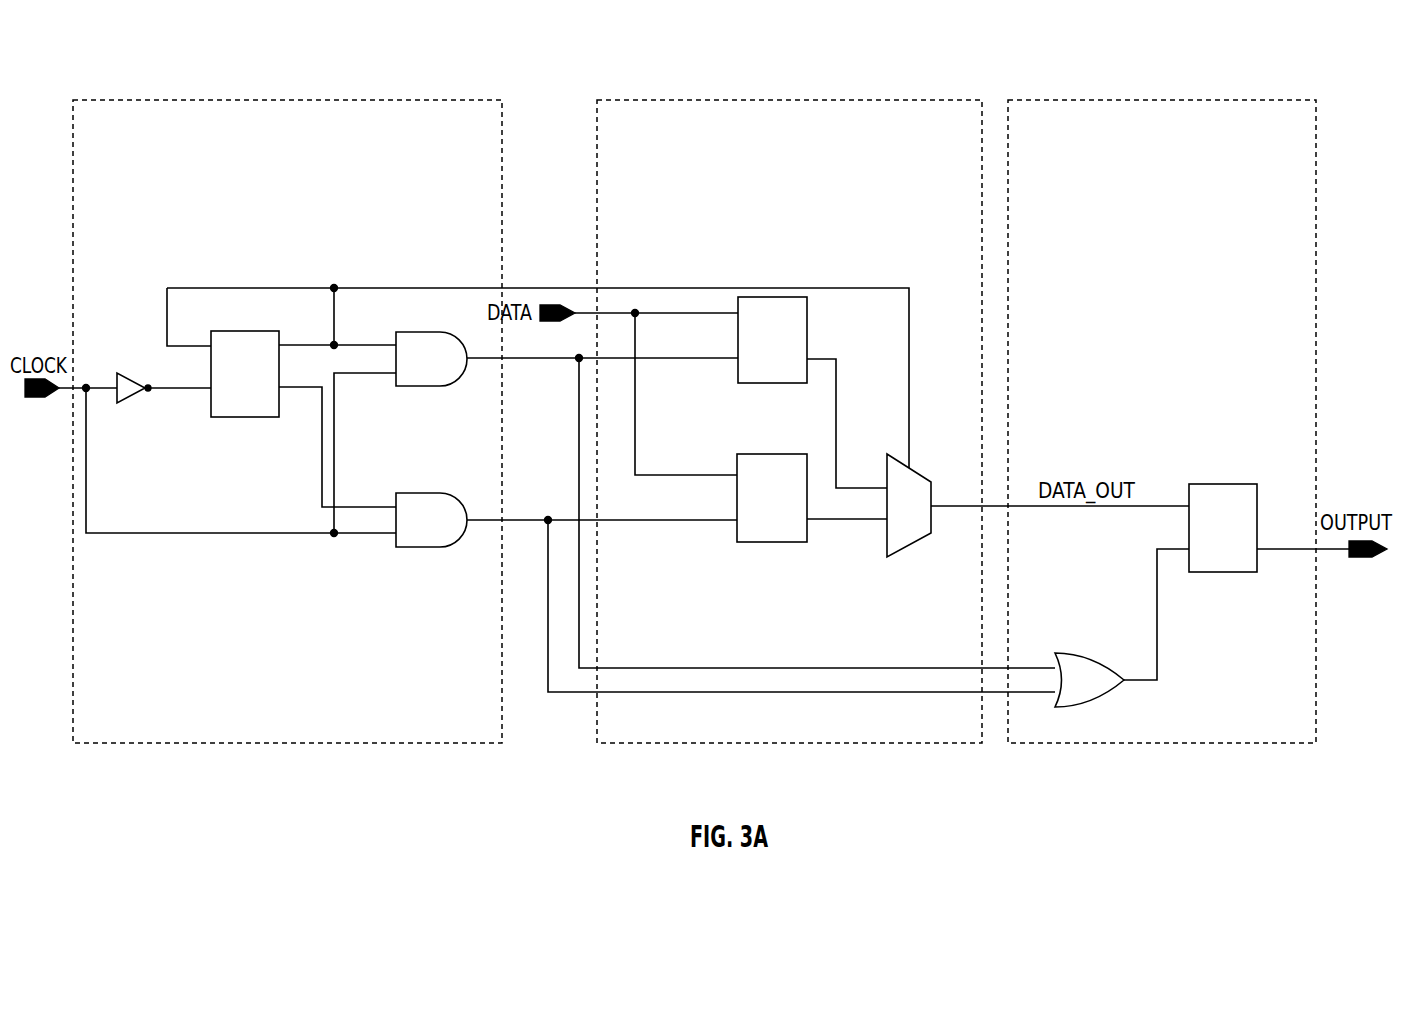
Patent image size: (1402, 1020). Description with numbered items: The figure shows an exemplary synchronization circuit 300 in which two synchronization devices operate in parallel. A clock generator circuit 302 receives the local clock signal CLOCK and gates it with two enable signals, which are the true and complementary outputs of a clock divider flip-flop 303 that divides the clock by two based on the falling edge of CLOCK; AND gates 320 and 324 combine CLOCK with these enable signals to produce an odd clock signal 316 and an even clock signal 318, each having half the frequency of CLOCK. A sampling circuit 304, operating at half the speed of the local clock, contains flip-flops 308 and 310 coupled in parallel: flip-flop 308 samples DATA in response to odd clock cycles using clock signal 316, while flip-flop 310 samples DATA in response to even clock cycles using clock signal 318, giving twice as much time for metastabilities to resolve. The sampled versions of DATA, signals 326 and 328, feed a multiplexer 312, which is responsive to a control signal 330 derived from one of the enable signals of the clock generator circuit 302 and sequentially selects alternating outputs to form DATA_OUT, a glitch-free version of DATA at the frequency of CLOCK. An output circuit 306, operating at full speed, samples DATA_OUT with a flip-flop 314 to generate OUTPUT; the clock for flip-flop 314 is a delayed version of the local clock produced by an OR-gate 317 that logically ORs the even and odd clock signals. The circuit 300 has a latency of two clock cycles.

The synchronization circuit 300 is at (142, 69).
The clock generator circuit 302 is at (300, 244).
The flip-flop 303 is at (262, 383).
The sampling circuit 304 is at (798, 247).
The output circuit 306 is at (1188, 247).
The flip-flop 308 is at (794, 335).
The flip-flop 310 is at (794, 500).
The multiplexer 312 is at (929, 520).
The flip-flop 314 is at (1244, 530).
The clock signal 316 is at (533, 360).
The OR-gate 317 is at (1107, 692).
The clock signal 318 is at (522, 518).
The AND gate 320 is at (443, 370).
The AND gate 324 is at (443, 535).
The signal 326 is at (838, 370).
The signal 328 is at (830, 521).
The multiplexer select signal 330 is at (895, 287).